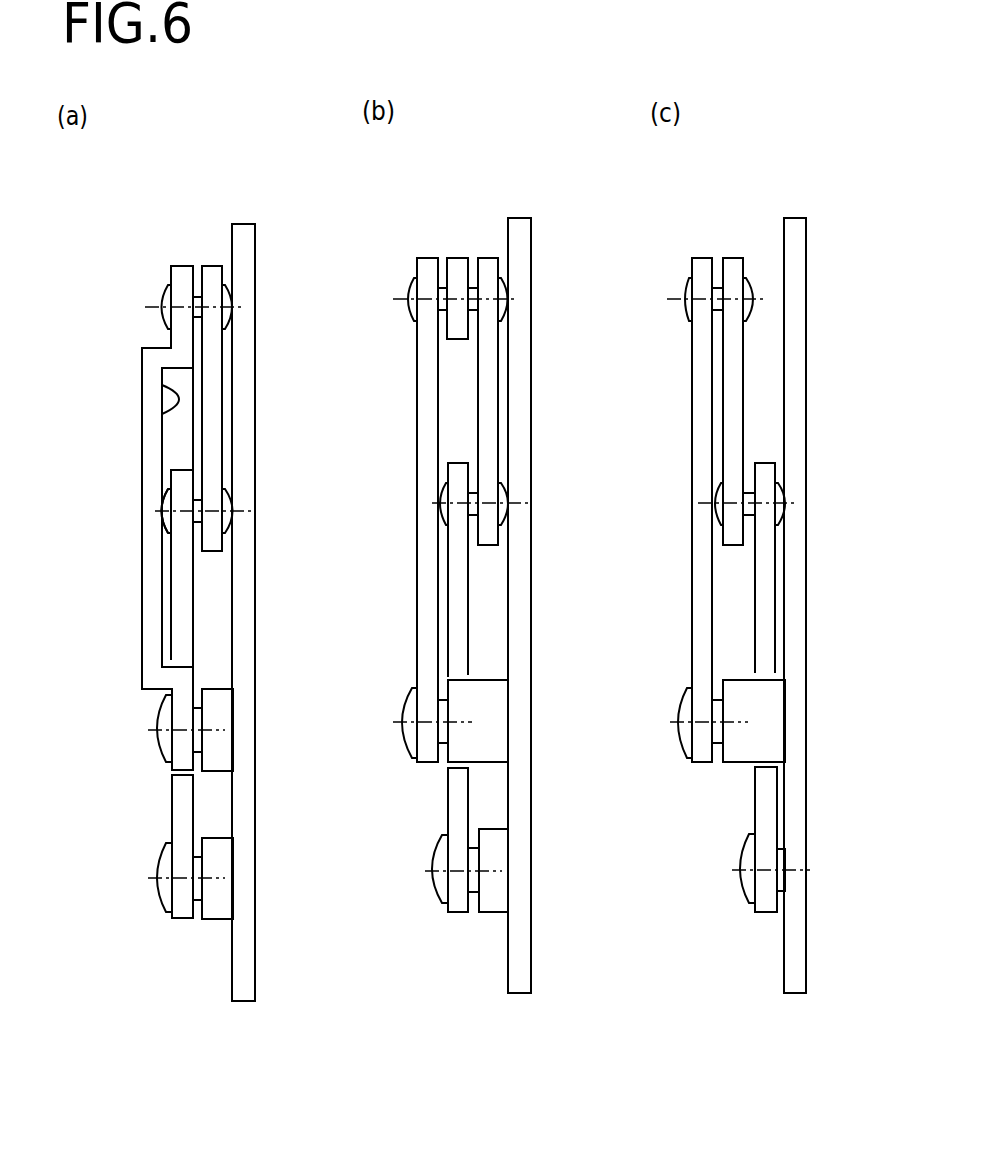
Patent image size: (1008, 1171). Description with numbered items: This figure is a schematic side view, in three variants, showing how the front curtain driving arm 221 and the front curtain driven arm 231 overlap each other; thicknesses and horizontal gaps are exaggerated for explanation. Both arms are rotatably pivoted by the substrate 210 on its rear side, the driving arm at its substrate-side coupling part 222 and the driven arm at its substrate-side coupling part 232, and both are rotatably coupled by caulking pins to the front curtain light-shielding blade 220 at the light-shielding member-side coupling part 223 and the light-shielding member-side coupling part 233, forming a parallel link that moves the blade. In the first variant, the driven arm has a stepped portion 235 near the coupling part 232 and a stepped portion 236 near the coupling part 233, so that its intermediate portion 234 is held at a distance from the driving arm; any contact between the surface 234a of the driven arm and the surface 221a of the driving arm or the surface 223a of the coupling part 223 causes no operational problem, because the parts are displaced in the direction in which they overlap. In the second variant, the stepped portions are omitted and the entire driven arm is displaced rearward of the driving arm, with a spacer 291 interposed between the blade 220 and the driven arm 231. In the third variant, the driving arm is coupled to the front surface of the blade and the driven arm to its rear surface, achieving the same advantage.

The substrate 210 is at (243, 412).
The front curtain light-shielding blade 220 is at (215, 375).
The front curtain driving arm 221 is at (175, 619).
The surface of the front curtain driving arm 221a is at (170, 650).
The substrate-side coupling part 222 is at (172, 880).
The light-shielding member-side coupling part 223 is at (166, 513).
The surface of the light-shielding member coupling part 223a is at (163, 522).
The front curtain driven arm 231 is at (148, 499).
The substrate-side coupling part 232 is at (170, 730).
The light-shielding member-side coupling part 233 is at (172, 308).
The intermediate portion 234 is at (150, 447).
The surface of the front curtain driven arm 234a is at (164, 385).
The stepped portion 235 is at (158, 678).
The stepped portion 236 is at (158, 358).
The spacer 291 is at (460, 267).